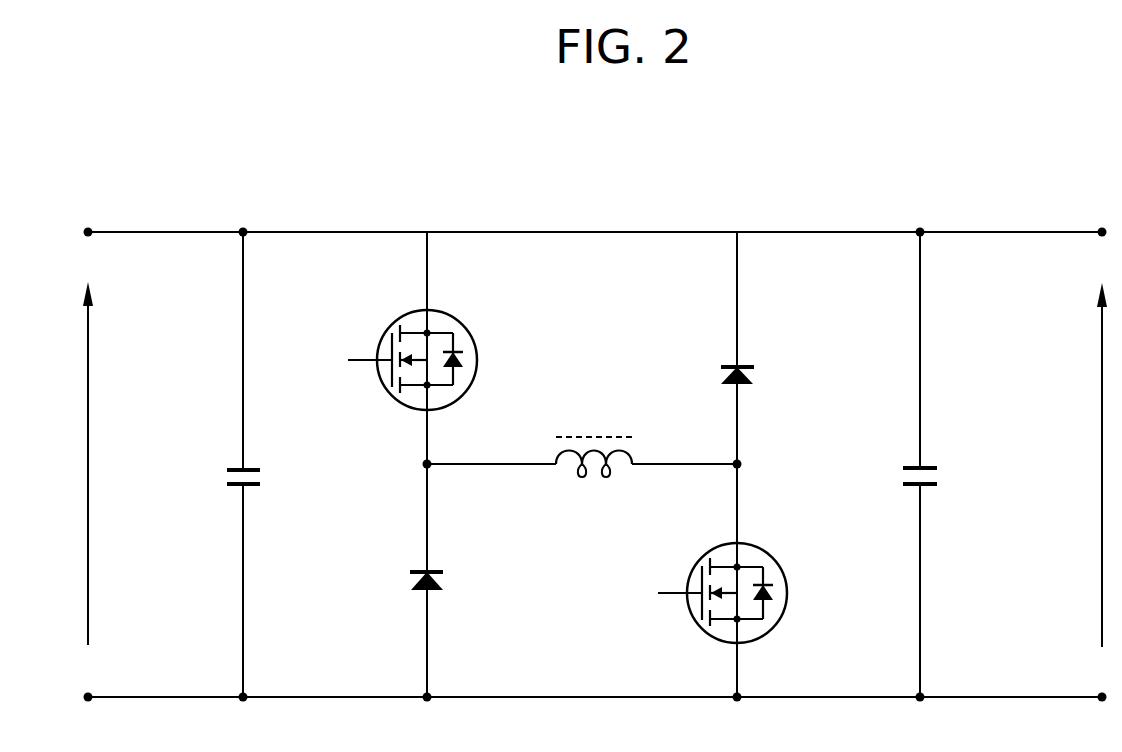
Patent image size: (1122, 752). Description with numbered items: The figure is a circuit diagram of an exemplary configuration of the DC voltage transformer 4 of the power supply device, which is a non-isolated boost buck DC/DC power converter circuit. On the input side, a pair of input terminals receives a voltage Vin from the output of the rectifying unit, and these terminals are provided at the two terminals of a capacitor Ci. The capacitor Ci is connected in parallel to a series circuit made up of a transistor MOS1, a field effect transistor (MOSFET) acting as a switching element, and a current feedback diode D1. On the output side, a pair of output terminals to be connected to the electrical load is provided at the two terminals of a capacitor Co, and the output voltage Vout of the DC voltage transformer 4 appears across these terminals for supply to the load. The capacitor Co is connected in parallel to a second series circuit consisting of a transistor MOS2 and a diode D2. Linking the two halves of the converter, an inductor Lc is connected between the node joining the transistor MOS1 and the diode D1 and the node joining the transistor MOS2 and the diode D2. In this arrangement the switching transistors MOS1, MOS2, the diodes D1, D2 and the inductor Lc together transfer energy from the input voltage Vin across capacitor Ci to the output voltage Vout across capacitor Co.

The DC voltage transformer 4 is at (636, 153).
The transistor MOS1 is at (445, 337).
The transistor MOS2 is at (769, 597).
The current feedback diode D1 is at (458, 595).
The diode D2 is at (770, 367).
The inductor Lc is at (595, 424).
The capacitor Ci is at (226, 464).
The capacitor Co is at (940, 464).
The voltage Vin is at (123, 463).
The output voltage Vout is at (1053, 465).